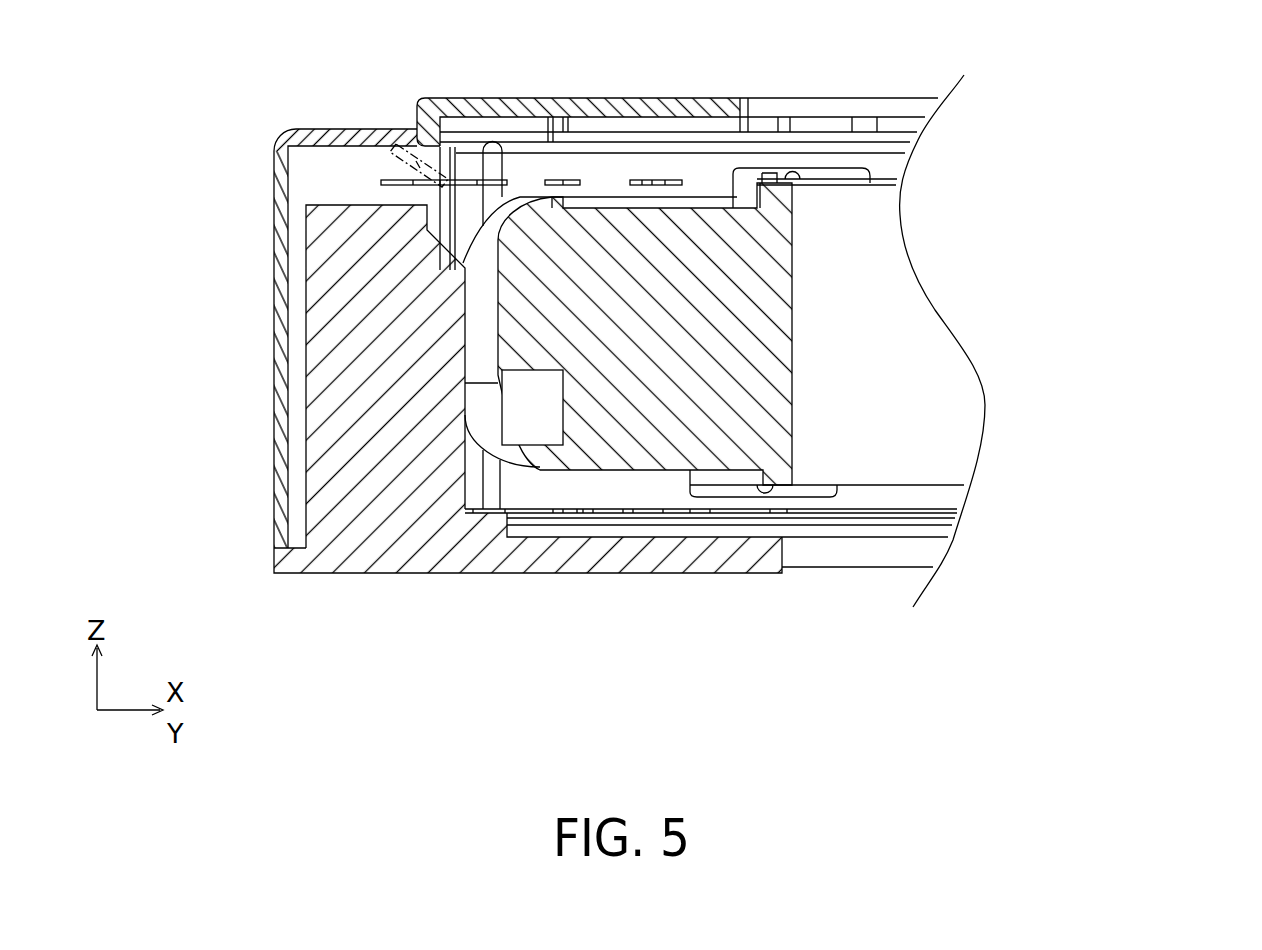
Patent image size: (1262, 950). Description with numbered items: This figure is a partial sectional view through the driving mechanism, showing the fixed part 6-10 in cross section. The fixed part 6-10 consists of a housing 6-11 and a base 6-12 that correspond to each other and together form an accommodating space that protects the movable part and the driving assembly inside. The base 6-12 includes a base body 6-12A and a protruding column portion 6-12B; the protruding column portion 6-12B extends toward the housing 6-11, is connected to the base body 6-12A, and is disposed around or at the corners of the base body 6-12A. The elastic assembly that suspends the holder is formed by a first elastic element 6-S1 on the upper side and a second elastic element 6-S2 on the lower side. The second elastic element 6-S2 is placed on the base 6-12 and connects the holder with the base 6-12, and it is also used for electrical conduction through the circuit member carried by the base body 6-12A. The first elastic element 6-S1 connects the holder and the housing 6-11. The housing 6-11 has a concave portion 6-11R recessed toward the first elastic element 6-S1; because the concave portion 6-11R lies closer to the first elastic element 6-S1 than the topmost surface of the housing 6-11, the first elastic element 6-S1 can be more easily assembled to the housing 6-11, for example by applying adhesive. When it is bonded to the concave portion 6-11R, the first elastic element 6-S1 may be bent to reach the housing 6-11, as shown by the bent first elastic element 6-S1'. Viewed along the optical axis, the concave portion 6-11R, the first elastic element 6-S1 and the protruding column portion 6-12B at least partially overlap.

The fixed part 6-10 is at (1180, 100).
The housing 6-11 is at (521, 90).
The concave portion 6-11R is at (362, 127).
The base 6-12 is at (513, 676).
The base body 6-12A is at (460, 573).
The protruding column portion 6-12B is at (342, 475).
The first elastic element 6-S1 is at (432, 183).
The bent first elastic element 6-S1' is at (310, 151).
The second elastic element 6-S2 is at (615, 517).